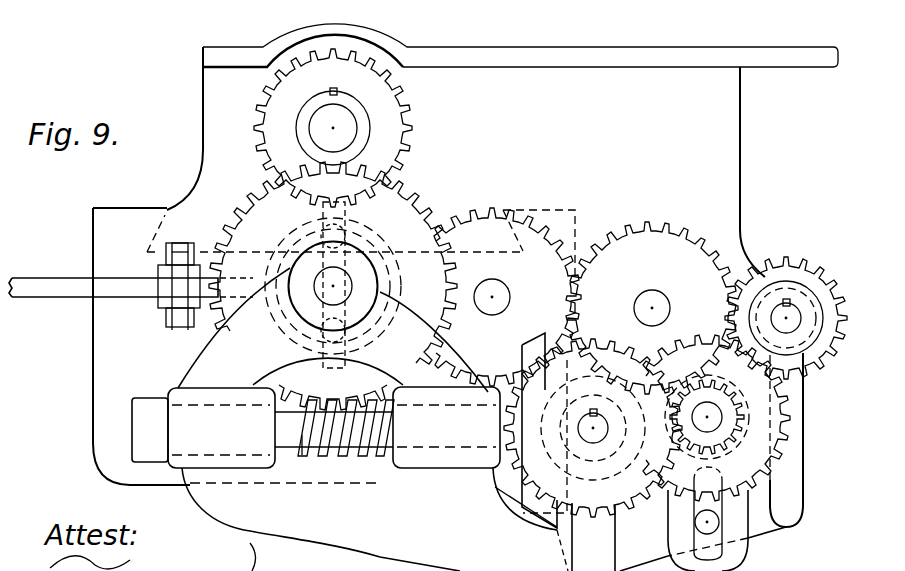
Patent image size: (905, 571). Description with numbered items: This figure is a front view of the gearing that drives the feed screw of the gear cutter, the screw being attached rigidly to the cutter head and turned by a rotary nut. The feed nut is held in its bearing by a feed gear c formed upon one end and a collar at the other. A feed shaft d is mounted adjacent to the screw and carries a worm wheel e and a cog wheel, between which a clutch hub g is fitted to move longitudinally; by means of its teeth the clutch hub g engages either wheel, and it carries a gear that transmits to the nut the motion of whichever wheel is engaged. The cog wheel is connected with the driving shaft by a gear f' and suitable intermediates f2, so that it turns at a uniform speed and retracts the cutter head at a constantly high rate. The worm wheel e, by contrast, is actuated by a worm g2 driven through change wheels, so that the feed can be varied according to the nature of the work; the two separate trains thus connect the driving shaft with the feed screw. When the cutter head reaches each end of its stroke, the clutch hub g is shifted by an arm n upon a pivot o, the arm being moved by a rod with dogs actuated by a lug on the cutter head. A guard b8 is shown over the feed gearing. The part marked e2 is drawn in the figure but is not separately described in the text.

The feed gear c is at (413, 118).
The worm wheel e is at (420, 194).
The intermediates f2 is at (491, 210).
The guard b8 is at (593, 68).
The gear f' is at (786, 301).
The clutch hub g is at (285, 222).
The feed shaft d is at (349, 287).
The arm n is at (113, 302).
The pivot o is at (170, 302).
The shifting wedge e2 is at (552, 340).
The worm g2 is at (350, 453).